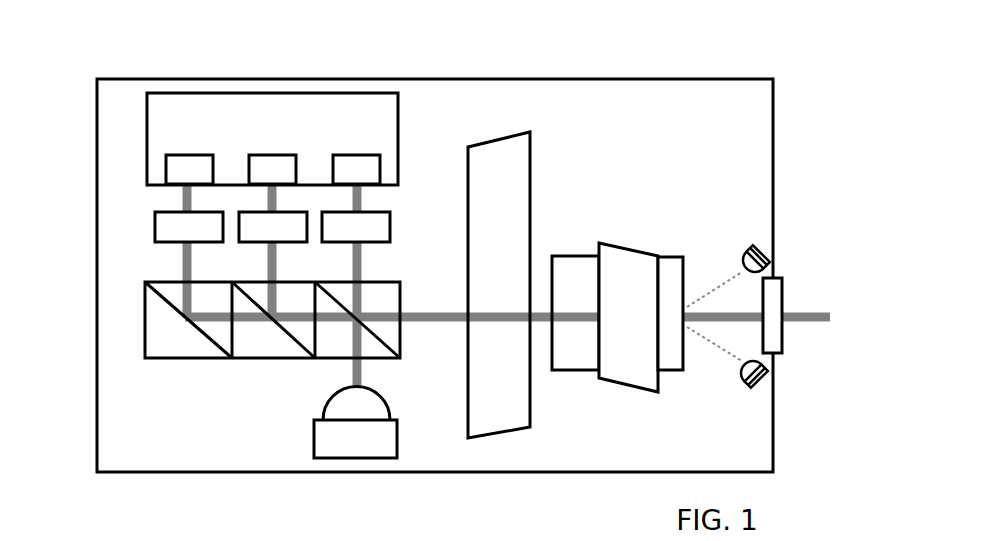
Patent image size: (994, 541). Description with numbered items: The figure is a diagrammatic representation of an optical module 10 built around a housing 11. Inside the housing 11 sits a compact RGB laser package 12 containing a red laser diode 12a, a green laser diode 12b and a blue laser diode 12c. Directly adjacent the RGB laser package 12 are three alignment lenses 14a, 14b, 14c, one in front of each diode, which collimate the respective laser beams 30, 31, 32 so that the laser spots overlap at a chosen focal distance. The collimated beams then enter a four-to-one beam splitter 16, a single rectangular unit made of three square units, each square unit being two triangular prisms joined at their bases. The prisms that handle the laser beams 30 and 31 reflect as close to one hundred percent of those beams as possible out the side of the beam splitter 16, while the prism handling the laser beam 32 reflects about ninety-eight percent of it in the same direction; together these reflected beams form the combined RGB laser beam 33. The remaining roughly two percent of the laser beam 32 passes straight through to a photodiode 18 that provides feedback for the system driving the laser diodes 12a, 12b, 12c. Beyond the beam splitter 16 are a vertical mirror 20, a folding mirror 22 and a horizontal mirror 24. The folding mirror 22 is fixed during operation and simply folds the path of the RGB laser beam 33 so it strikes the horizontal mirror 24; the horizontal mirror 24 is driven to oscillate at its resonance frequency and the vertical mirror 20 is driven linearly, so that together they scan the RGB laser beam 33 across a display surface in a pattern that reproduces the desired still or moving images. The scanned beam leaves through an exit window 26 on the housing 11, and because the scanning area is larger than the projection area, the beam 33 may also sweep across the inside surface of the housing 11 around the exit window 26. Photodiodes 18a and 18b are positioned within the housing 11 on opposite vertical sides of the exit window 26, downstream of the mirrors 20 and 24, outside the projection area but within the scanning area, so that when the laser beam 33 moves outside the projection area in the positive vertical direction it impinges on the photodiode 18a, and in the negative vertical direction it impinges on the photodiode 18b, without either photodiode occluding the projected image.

The optical module 10 is at (636, 78).
The housing 11 is at (710, 78).
The RGB laser package 12 is at (200, 93).
The red laser diode 12a is at (166, 168).
The green laser diode 12b is at (249, 157).
The blue laser diode 12c is at (360, 155).
The alignment lens 14a is at (157, 242).
The alignment lens 14b is at (238, 211).
The alignment lens 14c is at (390, 212).
The beam splitter 16 is at (145, 359).
The photodiode 18 is at (314, 439).
The photodiode 18a is at (767, 258).
The photodiode 18b is at (766, 376).
The vertical mirror 20 is at (468, 438).
The folding mirror 22 is at (633, 388).
The horizontal mirror 24 is at (583, 255).
The exit window 26 is at (782, 283).
The laser beam 30 is at (212, 250).
The laser beam 31 is at (296, 250).
The laser beam 32 is at (381, 285).
The combined RGB laser beam 33 is at (507, 302).